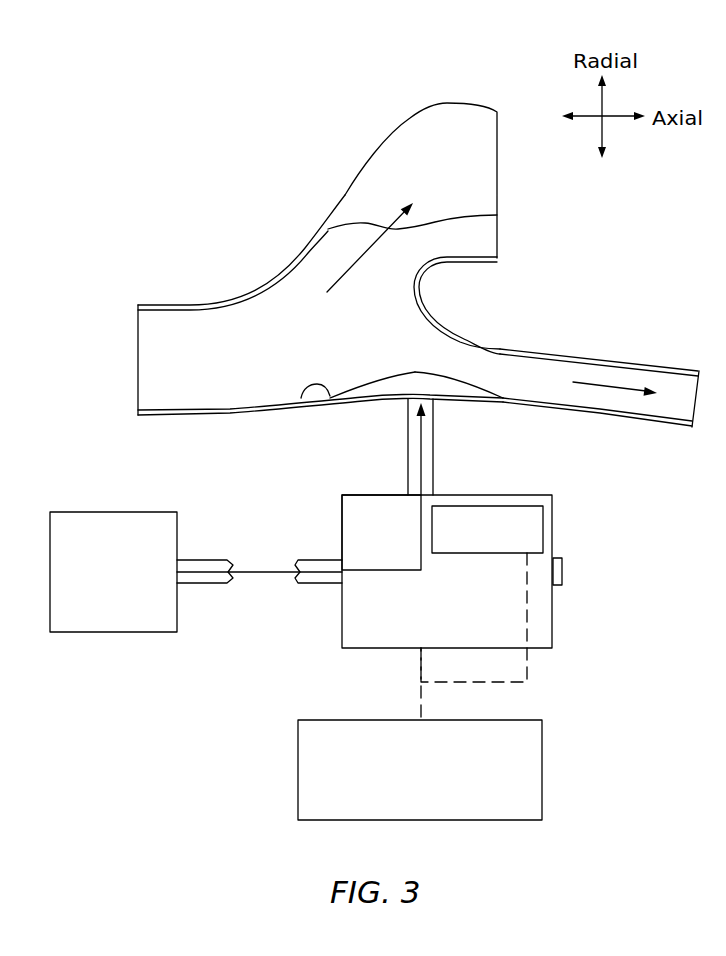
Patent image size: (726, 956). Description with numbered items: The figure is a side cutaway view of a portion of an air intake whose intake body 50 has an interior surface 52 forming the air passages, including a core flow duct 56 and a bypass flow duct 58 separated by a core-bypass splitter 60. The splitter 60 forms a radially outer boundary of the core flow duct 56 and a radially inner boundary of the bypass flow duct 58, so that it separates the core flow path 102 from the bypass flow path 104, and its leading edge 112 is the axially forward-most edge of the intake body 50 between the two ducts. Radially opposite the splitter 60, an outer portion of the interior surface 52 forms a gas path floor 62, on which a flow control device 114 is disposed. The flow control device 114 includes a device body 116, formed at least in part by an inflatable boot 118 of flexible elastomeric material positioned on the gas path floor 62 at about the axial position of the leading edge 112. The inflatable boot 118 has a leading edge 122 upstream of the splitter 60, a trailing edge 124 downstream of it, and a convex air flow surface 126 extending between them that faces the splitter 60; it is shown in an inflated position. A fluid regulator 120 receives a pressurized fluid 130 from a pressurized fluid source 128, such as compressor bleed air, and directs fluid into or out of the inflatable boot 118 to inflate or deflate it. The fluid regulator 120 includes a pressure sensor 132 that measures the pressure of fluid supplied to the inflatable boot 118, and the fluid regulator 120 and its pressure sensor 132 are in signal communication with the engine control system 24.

The engine control system 24 is at (542, 768).
The intake body 50 is at (170, 303).
The interior surface 52 is at (165, 411).
The core flow duct 56 is at (331, 208).
The bypass flow duct 58 is at (603, 355).
The core-bypass splitter 60 is at (445, 280).
The gas path floor 62 is at (372, 395).
The core flow path 102 is at (354, 263).
The bypass flow path 104 is at (628, 388).
The leading edge 112 is at (418, 291).
The flow control device 114 is at (601, 582).
The device body 116 is at (499, 375).
The inflatable boot 118 is at (458, 377).
The fluid regulator 120 is at (342, 617).
The leading edge 122 is at (307, 396).
The trailing edge 124 is at (503, 403).
The air flow surface 126 is at (428, 373).
The pressurized fluid source 128 is at (113, 633).
The pressurized fluid 130 is at (388, 570).
The pressure sensor 132 is at (545, 530).